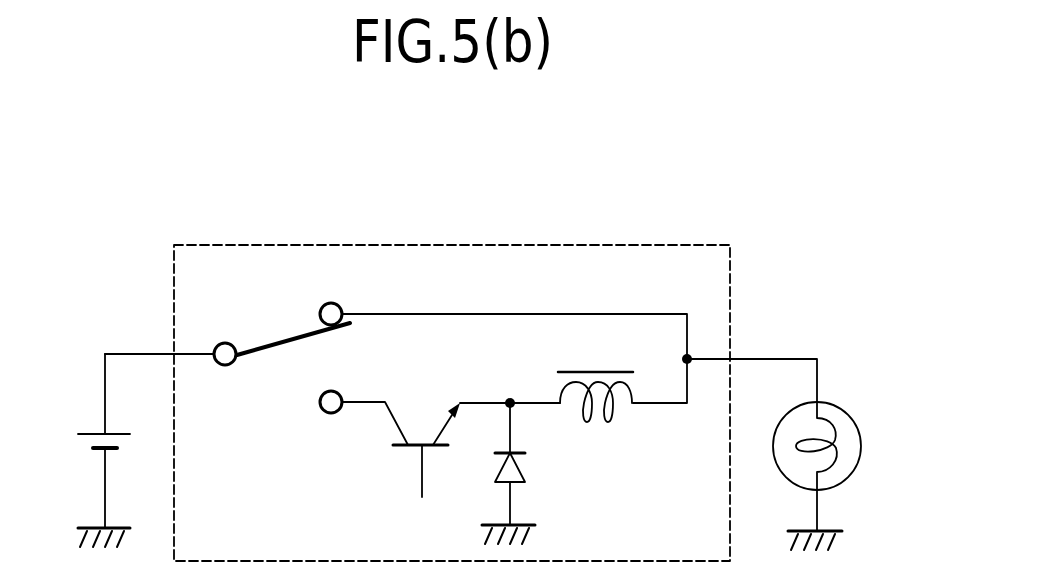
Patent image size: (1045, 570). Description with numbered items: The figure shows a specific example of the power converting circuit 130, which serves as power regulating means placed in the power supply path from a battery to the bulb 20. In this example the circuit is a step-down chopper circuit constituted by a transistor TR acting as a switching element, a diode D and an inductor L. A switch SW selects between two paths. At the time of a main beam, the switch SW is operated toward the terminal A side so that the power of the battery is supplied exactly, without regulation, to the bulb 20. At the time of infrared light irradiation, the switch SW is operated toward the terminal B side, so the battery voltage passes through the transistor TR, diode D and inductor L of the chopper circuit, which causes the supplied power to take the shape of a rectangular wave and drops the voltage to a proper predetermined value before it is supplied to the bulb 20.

The power converting circuit 130 is at (592, 246).
The bulb 20 is at (861, 446).
The switch SW is at (282, 361).
The transistor TR is at (451, 449).
The inductor L is at (595, 416).
The diode D is at (517, 473).
The terminal A is at (331, 298).
The terminal B is at (349, 387).